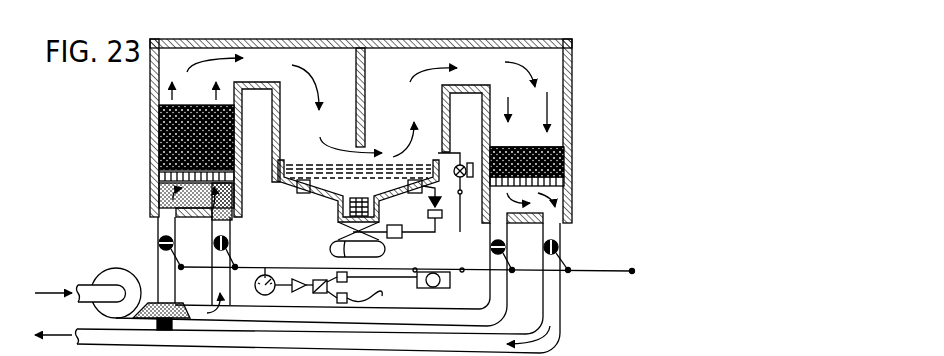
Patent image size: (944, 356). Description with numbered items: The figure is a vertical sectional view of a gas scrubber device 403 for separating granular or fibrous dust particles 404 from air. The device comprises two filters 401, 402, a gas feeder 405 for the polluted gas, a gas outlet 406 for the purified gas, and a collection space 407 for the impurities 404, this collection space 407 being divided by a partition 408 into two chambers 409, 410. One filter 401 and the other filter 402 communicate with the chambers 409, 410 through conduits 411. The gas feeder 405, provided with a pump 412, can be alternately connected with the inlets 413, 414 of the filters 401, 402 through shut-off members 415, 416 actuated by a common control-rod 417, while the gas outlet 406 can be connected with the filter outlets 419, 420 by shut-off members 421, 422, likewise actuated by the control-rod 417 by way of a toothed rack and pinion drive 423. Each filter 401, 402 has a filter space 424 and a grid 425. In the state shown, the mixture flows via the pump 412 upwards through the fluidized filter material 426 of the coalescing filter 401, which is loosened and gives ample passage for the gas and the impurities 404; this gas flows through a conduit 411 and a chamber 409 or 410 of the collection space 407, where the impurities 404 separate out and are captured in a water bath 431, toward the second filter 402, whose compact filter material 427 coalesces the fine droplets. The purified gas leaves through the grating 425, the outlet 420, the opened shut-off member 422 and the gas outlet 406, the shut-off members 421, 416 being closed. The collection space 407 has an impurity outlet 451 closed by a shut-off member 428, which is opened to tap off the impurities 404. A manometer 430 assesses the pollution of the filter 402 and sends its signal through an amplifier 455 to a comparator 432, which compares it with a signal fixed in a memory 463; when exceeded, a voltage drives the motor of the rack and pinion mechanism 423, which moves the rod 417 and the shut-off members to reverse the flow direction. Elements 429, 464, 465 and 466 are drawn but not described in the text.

The filter 401 is at (157, 152).
The filter 402 is at (550, 136).
The device 403 is at (537, 41).
The dust particles 404 is at (279, 183).
The gas feeder 405 is at (93, 295).
The gas outlet 406 is at (93, 333).
The collection space 407 is at (278, 143).
The partition 408 is at (364, 60).
The chamber 409 is at (300, 53).
The chamber 410 is at (407, 63).
The conduits 411 is at (250, 52).
The pump 412 is at (102, 282).
The inlet 413 is at (232, 226).
The inlet 414 is at (492, 234).
The shut-off member 415 is at (228, 248).
The shut-off member 416 is at (491, 250).
The control-rod 417 is at (528, 272).
The filter outlet 419 is at (165, 229).
The filter outlet 420 is at (557, 236).
The shut-off member 421 is at (160, 246).
The shut-off member 422 is at (558, 250).
The toothed rack and pinion drive 423 is at (450, 282).
The filter space 424 is at (167, 91).
The grid 425 is at (157, 176).
The filter material 426 is at (155, 128).
The filter material 427 is at (550, 162).
The shut-off member 428 is at (353, 226).
The filter surface 429 is at (557, 147).
The manometer 430 is at (255, 285).
The water bath 431 is at (338, 210).
The comparator 432 is at (317, 280).
The impurity outlet 451 is at (340, 250).
The amplifier 455 is at (292, 280).
The memory 463 is at (377, 266).
The level sensor 464 is at (300, 193).
The level sensor 465 is at (412, 193).
The discharge valve 466 is at (441, 202).